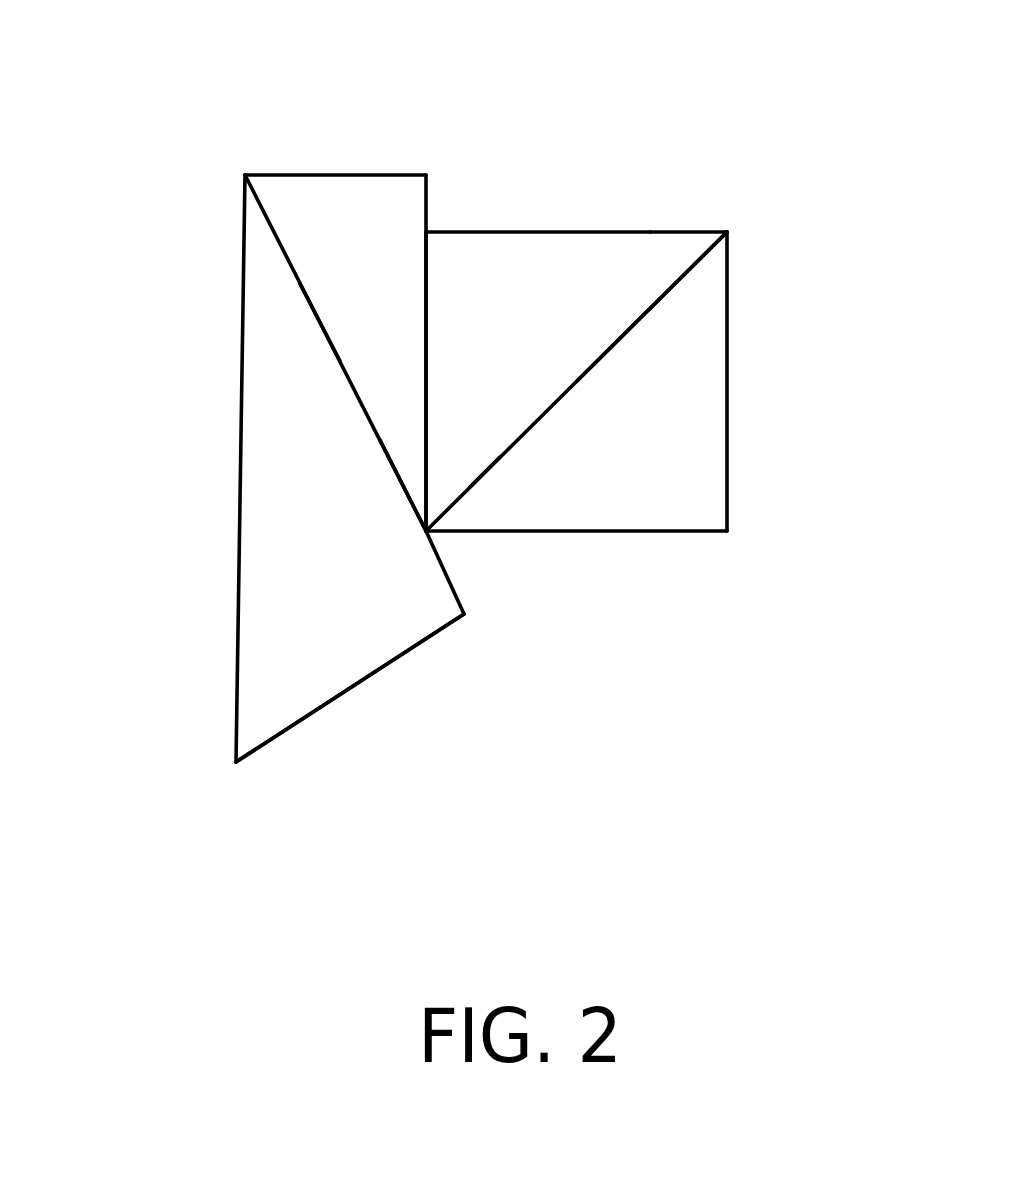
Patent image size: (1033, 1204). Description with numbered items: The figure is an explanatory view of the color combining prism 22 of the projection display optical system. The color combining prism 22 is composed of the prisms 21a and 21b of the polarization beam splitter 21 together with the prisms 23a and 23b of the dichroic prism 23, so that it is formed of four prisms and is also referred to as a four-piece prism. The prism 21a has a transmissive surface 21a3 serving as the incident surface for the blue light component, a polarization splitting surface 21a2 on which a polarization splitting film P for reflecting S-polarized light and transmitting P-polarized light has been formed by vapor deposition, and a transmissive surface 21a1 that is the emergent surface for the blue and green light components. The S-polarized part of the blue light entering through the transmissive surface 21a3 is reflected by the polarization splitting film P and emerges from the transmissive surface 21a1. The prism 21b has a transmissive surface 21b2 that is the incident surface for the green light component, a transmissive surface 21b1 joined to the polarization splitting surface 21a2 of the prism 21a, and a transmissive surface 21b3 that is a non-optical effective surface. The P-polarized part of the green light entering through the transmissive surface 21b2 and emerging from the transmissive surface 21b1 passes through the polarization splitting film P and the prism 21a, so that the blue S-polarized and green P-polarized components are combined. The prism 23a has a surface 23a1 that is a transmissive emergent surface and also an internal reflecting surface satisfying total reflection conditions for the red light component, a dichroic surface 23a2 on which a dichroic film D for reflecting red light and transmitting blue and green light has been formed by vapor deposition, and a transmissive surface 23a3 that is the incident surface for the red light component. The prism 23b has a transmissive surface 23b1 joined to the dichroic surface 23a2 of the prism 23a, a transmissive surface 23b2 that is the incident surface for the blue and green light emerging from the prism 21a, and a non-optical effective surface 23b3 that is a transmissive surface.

The polarization beam splitter 21 is at (770, 511).
The prism 21a is at (628, 250).
The transmissive surface (first emergent surface) 21a1 is at (430, 252).
The polarization splitting surface 21a2 is at (602, 347).
The transmissive surface (first incident surface) 21a3 is at (687, 232).
The prism 21b is at (663, 495).
The transmissive surface 21b1 is at (583, 375).
The transmissive surface (second incident surface) 21b2 is at (727, 305).
The transmissive surface (second emergent surface) 21b3 is at (590, 532).
The color combining prism 22 is at (245, 808).
The dichroic prism 23 is at (186, 497).
The prism 23a is at (252, 672).
The surface (third emergent surface) 23a1 is at (240, 596).
The dichroic surface 23a2 is at (397, 480).
The transmissive surface (fourth emergent surface) 23a3 is at (343, 693).
The prism 23b is at (327, 192).
The transmissive surface 23b1 is at (266, 206).
The transmissive surface (third incident surface) 23b2 is at (427, 273).
The non-optical effective surface 23b3 is at (288, 175).
The dichroic film D is at (338, 359).
The polarization splitting film P is at (483, 480).